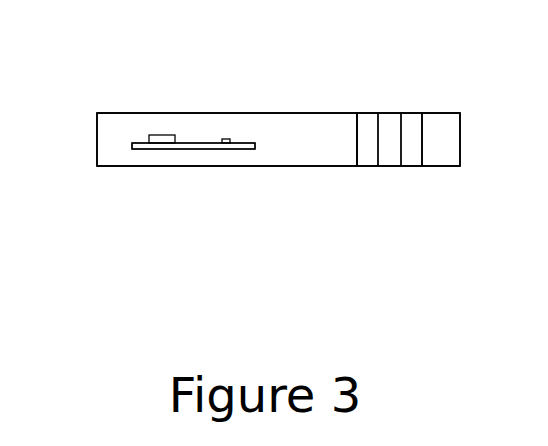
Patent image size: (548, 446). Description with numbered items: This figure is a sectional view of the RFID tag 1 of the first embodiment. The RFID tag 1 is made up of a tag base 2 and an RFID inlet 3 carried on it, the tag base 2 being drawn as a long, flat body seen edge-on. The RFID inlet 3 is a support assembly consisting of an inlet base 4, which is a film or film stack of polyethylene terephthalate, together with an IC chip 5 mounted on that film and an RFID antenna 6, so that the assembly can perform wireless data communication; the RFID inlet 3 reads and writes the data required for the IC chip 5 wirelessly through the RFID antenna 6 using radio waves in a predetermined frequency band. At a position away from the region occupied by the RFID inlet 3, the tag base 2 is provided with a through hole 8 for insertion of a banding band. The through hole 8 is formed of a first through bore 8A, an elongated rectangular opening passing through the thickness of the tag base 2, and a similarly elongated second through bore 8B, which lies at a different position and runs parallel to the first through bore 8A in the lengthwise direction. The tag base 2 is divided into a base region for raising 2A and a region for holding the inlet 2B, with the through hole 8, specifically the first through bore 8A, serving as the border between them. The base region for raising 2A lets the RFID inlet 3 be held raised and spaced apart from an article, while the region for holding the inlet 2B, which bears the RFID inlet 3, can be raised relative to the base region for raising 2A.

The RFID tag 1 is at (450, 98).
The tag base 2 is at (122, 167).
The base region for raising 2A is at (397, 108).
The region for holding the inlet 2B is at (312, 109).
The RFID inlet 3 is at (122, 141).
The inlet base 4 is at (197, 150).
The IC chip 5 is at (158, 134).
The RFID antenna 6 is at (223, 138).
The through hole 8 is at (347, 242).
The first through bore 8A is at (369, 169).
The second through bore 8B is at (412, 169).